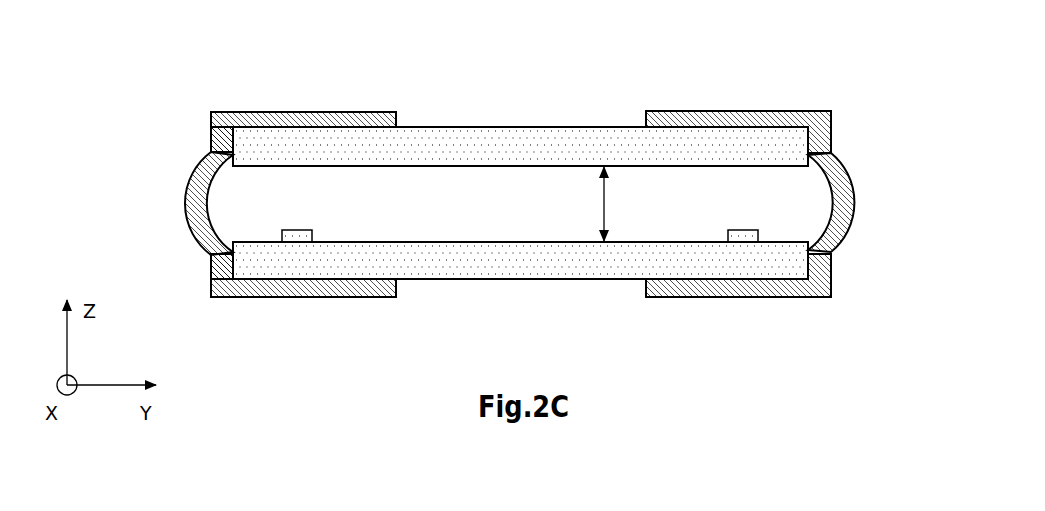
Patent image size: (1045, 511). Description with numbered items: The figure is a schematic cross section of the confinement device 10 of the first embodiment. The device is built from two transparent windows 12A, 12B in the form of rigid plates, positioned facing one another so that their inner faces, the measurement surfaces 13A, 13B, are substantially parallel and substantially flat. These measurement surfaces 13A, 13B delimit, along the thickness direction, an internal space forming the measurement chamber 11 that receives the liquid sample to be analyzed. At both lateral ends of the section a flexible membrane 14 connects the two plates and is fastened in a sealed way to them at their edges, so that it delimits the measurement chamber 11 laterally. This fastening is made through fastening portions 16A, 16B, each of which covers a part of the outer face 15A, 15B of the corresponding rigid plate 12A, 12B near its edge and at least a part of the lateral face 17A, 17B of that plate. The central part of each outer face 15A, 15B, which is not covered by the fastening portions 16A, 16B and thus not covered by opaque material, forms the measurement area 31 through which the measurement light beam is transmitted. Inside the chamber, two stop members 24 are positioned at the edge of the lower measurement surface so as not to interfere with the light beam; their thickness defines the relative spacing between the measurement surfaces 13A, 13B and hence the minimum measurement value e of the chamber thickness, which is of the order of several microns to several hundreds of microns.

The confinement device 10 is at (237, 69).
The measurement chamber 11 is at (512, 214).
The transparent window 12A is at (521, 281).
The transparent window 12B is at (507, 126).
The measurement surface 13A is at (418, 242).
The measurement surface 13B is at (467, 166).
The flexible membrane 14 is at (183, 209).
The outer face 15A is at (617, 280).
The outer face 15B is at (622, 127).
The fastening portion 16A is at (303, 298).
The fastening portion 16B is at (318, 111).
The lateral face 17A is at (230, 262).
The lateral face 17B is at (222, 144).
The stop member 24 is at (297, 230).
The measurement area 31 is at (575, 79).
The measurement value e is at (593, 204).